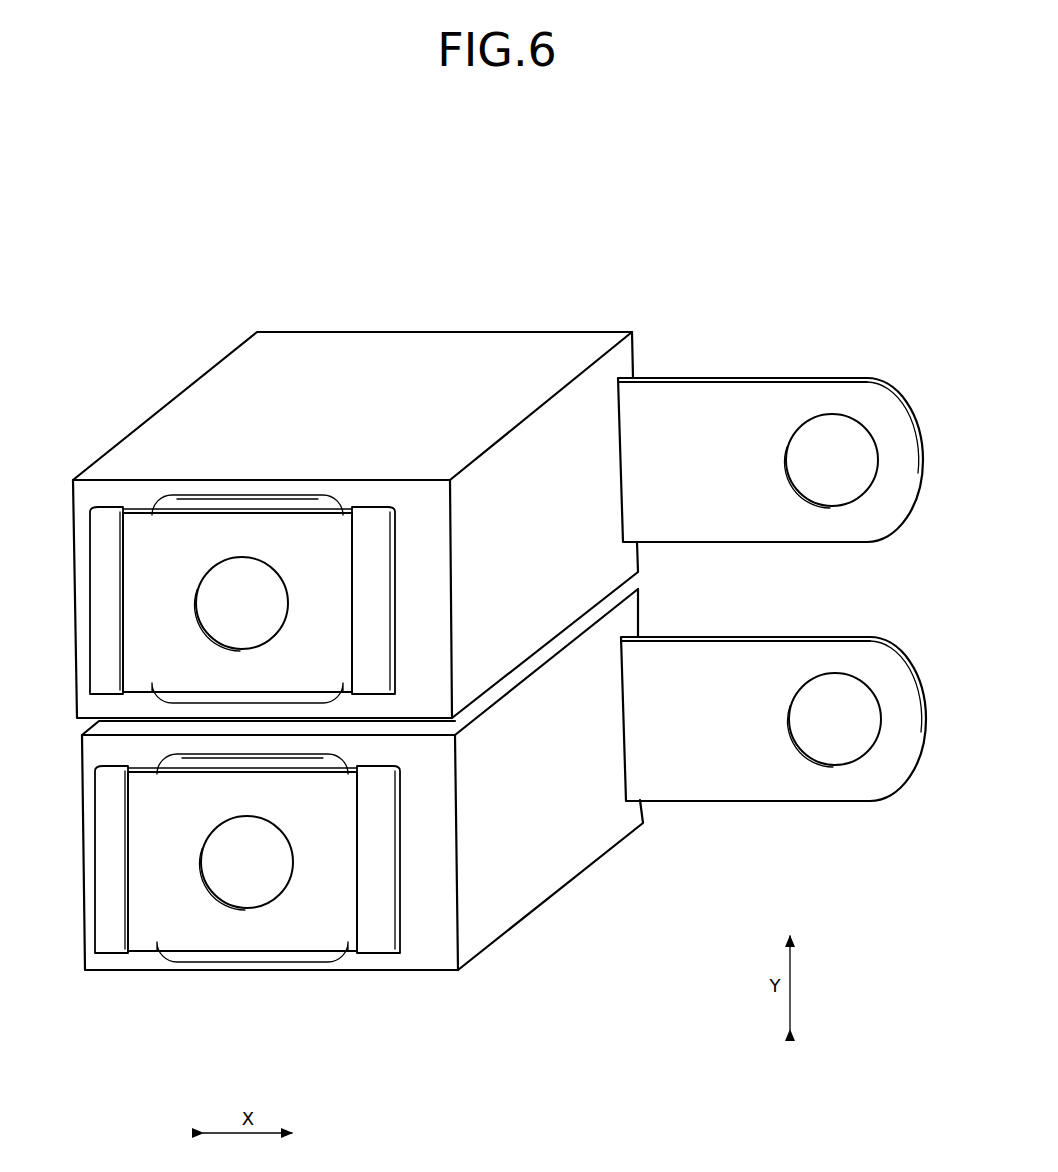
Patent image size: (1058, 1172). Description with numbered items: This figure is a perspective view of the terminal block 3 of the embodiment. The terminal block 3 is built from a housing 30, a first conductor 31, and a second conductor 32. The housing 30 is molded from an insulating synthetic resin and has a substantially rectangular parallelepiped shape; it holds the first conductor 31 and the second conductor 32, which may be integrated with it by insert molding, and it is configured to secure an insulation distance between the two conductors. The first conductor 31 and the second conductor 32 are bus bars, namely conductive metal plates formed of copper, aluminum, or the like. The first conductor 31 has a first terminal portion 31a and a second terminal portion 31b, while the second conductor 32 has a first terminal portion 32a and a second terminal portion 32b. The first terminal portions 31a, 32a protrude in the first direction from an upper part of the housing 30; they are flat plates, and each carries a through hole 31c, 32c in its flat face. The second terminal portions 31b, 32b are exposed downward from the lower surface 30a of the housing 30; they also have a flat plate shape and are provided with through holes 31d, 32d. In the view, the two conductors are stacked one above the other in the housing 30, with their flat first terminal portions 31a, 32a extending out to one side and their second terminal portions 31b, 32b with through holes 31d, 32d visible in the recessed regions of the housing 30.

The terminal block 3 is at (455, 180).
The housing 30 is at (362, 354).
The lower surface 30a is at (425, 940).
The first conductor 31 is at (682, 369).
The first terminal portion 31a is at (710, 417).
The second terminal portion 31b is at (151, 558).
The through hole 31c is at (822, 417).
The through hole 31d is at (233, 568).
The second conductor 32 is at (773, 682).
The first terminal portion 32a is at (773, 682).
The second terminal portion 32b is at (247, 899).
The through hole 32c is at (834, 665).
The through hole 32d is at (246, 930).